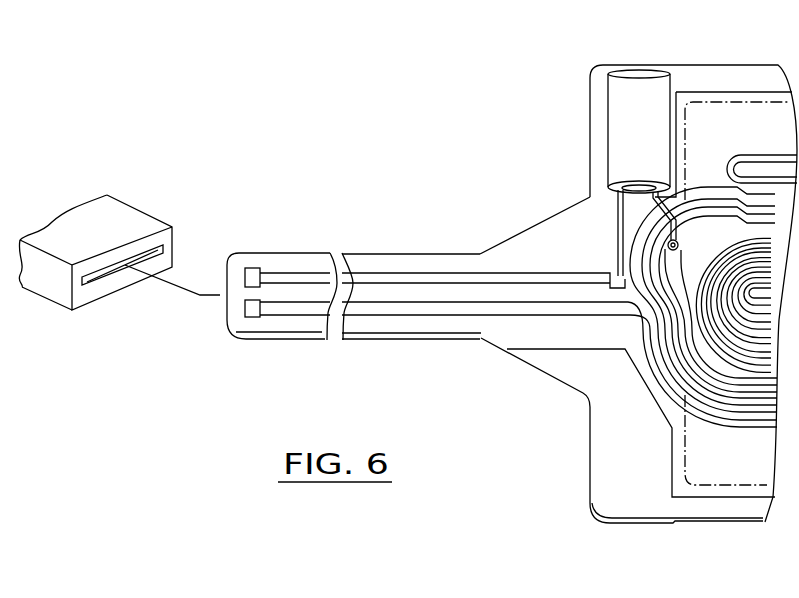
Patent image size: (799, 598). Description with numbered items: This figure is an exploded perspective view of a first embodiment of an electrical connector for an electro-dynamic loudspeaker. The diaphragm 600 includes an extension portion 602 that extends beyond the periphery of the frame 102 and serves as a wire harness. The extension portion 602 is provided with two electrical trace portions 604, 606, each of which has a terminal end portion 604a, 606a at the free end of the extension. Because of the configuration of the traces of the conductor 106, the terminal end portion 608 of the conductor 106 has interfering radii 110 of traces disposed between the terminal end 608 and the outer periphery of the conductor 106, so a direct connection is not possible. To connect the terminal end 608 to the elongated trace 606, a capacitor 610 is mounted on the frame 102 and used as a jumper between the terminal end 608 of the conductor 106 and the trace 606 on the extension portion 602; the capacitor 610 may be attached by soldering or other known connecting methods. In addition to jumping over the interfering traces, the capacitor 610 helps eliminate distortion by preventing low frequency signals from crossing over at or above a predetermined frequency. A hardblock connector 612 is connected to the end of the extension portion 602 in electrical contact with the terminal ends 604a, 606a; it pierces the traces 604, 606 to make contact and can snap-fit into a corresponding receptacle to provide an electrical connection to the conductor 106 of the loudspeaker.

The diaphragm 600 is at (716, 58).
The capacitor 610 is at (618, 118).
The terminal end portion 608 is at (689, 244).
The interfering radii 110 is at (645, 242).
The frame 102 is at (628, 526).
The conductor 106 is at (770, 146).
The extension portion 602 is at (373, 262).
The electrical trace portion 606 is at (410, 277).
The terminal end portion 606a is at (252, 272).
The electrical trace portion 604 is at (408, 310).
The terminal end portion 604a is at (255, 312).
The hardblock connector 612 is at (122, 215).